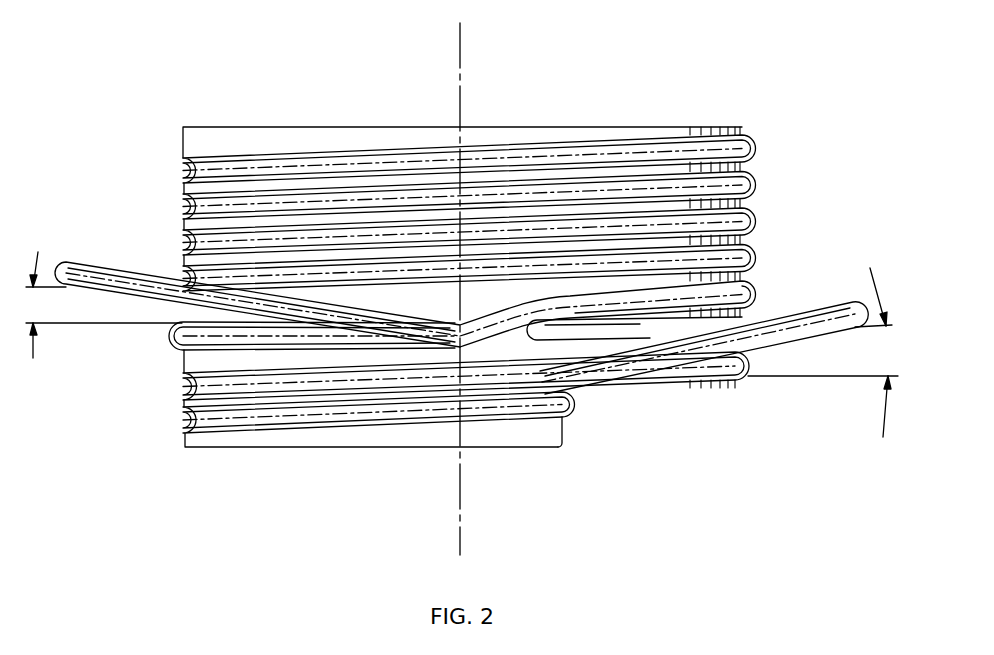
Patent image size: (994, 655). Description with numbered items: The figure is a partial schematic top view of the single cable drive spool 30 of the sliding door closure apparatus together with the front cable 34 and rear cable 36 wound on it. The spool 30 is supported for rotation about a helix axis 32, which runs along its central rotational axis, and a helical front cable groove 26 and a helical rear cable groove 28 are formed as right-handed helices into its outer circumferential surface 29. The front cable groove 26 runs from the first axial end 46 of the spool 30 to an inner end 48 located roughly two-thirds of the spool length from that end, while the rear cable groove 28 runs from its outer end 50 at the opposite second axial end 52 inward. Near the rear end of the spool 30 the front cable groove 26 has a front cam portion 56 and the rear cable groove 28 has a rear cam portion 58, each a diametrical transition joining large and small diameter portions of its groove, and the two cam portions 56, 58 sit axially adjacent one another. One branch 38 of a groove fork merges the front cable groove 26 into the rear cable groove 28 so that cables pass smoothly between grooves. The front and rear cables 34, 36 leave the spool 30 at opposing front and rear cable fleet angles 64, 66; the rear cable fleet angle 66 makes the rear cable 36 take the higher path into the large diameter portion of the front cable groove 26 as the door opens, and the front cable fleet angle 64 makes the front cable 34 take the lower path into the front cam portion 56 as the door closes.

The front cable groove 26 is at (453, 281).
The rear cable groove 28 is at (432, 414).
The outer circumferential surface 29 is at (183, 128).
The spool 30 is at (273, 140).
The helix axis 32 is at (460, 38).
The front cable 34 is at (135, 275).
The rear cable 36 is at (755, 323).
The branch of groove fork 38 is at (740, 382).
The first axial end 46 is at (413, 201).
The inner end of front cable groove 48 is at (538, 322).
The outer end of rear cable groove 50 is at (566, 421).
The second axial end 52 is at (395, 447).
The front cam portion 56 is at (198, 335).
The rear cam portion 58 is at (270, 433).
The front cable fleet angle 64 is at (101, 305).
The rear cable fleet angle 66 is at (825, 352).